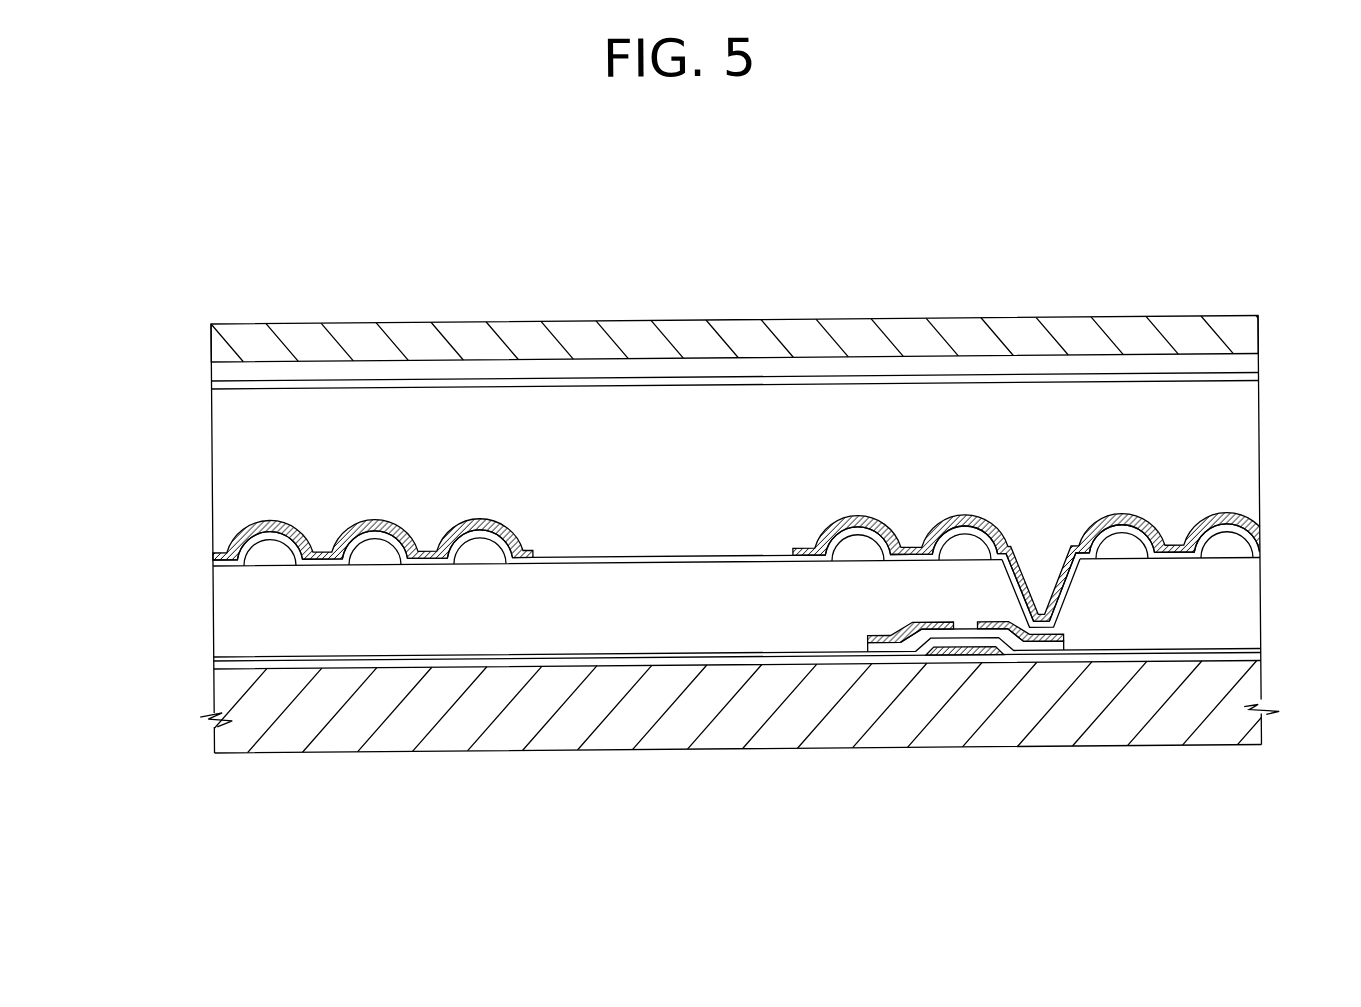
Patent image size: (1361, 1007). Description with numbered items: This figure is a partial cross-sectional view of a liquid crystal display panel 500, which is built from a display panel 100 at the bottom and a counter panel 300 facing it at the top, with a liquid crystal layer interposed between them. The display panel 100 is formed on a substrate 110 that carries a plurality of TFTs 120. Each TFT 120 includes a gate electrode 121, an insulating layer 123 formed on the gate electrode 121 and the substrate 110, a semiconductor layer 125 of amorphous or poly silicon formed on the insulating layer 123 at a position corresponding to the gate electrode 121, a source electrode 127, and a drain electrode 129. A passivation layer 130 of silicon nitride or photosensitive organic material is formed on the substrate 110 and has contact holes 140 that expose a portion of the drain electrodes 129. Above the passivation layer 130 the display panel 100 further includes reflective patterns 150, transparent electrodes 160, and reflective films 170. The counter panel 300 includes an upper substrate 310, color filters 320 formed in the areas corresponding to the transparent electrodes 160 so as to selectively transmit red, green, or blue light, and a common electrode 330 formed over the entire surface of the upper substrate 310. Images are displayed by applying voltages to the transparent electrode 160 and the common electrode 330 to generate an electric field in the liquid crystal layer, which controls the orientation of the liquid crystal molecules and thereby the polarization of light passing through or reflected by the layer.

The liquid crystal display panel 500 is at (766, 248).
The display panel 100 is at (1285, 519).
The substrate 110 is at (228, 697).
The TFT 120 is at (1143, 811).
The gate electrode 121 is at (947, 660).
The insulating layer 123 is at (1108, 664).
The semiconductor layer 125 is at (1017, 657).
The source electrode 127 is at (884, 652).
The drain electrode 129 is at (1060, 650).
The passivation layer 130 is at (228, 633).
The contact hole 140 is at (1030, 565).
The reflective pattern 150 is at (372, 553).
The transparent electrode 160 is at (215, 562).
The reflective film 170 is at (217, 552).
The counter panel 300 is at (110, 318).
The upper substrate 310 is at (218, 334).
The color filter 320 is at (218, 372).
The common electrode 330 is at (215, 390).